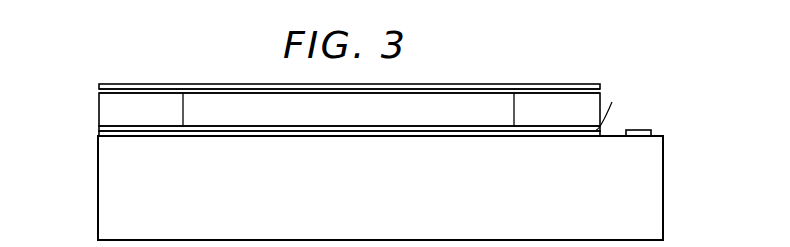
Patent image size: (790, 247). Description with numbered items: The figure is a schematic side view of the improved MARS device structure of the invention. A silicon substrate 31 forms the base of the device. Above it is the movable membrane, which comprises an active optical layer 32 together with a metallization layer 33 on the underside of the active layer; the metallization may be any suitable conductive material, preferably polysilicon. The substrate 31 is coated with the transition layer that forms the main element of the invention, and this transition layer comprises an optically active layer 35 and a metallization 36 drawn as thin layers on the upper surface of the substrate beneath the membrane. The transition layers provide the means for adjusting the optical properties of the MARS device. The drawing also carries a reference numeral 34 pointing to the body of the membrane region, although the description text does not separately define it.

The silicon substrate 31 is at (655, 162).
The active optical layer 32 is at (167, 90).
The metallization layer 33 is at (98, 90).
The piezoelectric body 34 is at (593, 108).
The optically active layer 35 is at (97, 134).
The metallization 36 is at (98, 130).